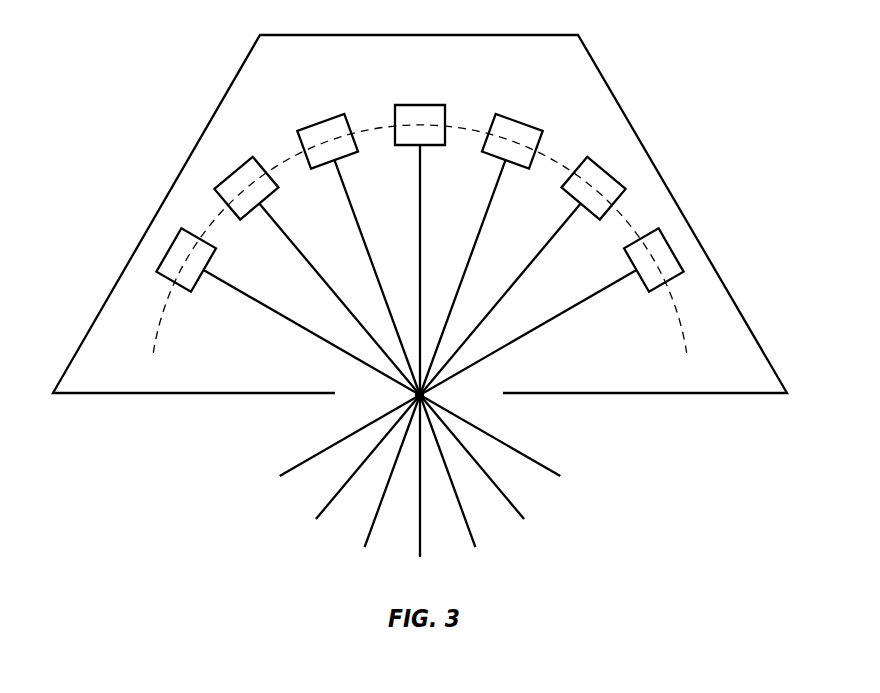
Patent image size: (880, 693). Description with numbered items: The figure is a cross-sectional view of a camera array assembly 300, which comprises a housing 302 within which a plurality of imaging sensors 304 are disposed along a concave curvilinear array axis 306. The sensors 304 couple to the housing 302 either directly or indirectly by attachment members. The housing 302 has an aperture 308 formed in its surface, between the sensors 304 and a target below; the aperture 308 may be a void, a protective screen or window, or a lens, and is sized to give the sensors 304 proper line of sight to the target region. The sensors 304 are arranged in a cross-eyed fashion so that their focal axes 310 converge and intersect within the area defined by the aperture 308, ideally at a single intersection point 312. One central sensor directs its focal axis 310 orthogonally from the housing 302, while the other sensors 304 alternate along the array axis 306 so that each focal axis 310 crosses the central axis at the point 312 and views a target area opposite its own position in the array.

The camera array assembly 300 is at (668, 512).
The housing 302 is at (655, 163).
The imaging sensors 304 is at (253, 156).
The concave curvilinear array axis 306 is at (160, 333).
The aperture 308 is at (472, 397).
The focal axes 310 is at (333, 347).
The intersection point 312 is at (413, 394).